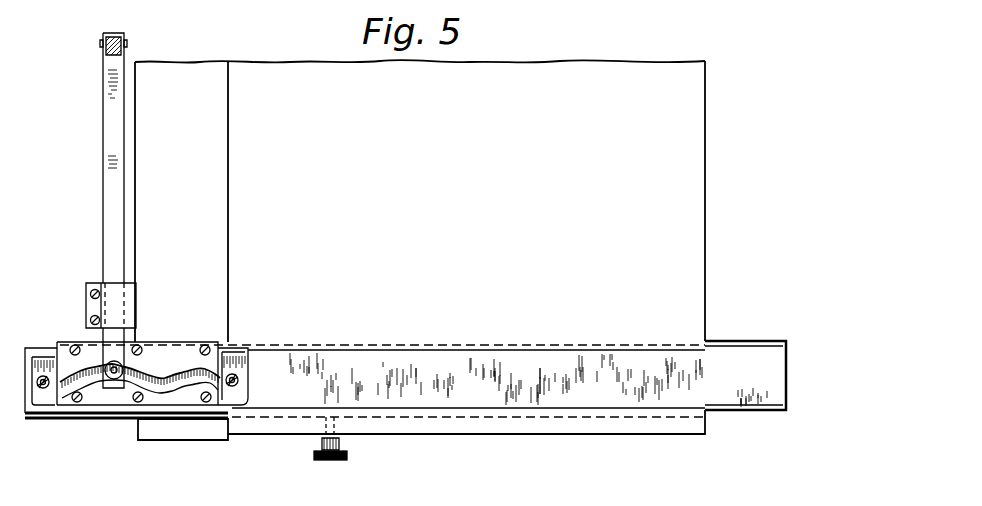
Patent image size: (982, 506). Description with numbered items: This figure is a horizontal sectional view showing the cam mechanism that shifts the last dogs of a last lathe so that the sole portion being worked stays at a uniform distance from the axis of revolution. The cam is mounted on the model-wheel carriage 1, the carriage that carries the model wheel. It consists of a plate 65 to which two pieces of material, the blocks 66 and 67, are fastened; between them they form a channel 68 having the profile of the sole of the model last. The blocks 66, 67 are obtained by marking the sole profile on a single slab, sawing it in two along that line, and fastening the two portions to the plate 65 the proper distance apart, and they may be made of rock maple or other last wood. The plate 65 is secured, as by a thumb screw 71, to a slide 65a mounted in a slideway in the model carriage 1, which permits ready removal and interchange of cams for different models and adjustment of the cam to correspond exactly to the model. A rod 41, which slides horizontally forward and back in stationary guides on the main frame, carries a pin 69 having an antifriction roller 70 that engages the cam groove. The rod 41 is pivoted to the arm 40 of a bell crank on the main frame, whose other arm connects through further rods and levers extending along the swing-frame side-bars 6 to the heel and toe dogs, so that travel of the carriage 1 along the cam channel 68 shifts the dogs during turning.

The model-wheel carriage 1 is at (689, 191).
The swing-frame side-bars 6 is at (133, 470).
The bell crank arm 40 is at (112, 34).
The rod 41 is at (106, 83).
The plate 65 is at (51, 362).
The slide 65a is at (599, 394).
The block 66 is at (192, 358).
The block 67 is at (188, 395).
The channel 68 is at (150, 372).
The pin 69 is at (113, 379).
The antifriction roller 70 is at (93, 380).
The thumb screw 71 is at (45, 389).